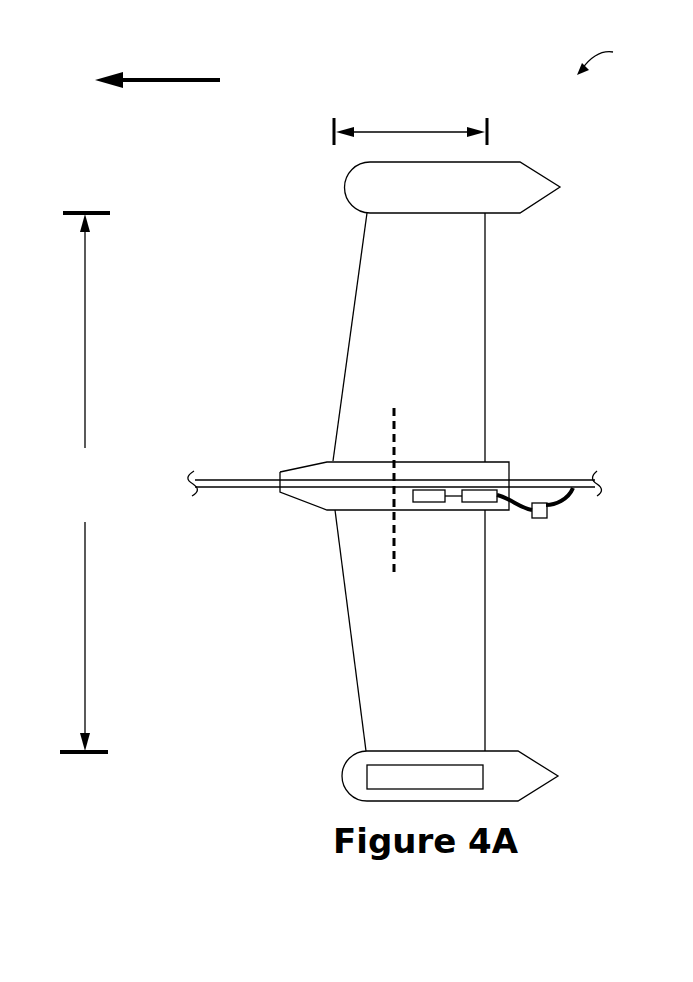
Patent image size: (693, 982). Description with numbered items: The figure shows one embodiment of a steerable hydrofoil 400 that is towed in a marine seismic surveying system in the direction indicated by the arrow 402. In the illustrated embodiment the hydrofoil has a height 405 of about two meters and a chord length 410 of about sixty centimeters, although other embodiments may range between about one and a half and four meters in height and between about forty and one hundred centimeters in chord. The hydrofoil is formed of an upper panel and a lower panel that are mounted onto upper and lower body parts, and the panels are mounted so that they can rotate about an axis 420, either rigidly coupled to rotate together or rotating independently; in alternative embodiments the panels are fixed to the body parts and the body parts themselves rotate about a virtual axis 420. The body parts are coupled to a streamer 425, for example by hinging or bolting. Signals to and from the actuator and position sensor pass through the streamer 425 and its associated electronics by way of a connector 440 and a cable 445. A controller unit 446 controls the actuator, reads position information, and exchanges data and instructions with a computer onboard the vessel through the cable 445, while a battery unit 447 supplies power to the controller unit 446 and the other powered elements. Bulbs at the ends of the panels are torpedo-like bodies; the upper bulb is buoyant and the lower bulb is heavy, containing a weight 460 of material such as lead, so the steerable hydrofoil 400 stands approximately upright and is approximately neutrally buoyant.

The steerable hydrofoil 400 is at (620, 54).
The arrow 402 is at (148, 80).
The height 405 is at (85, 482).
The chord length 410 is at (405, 132).
The axis 420 is at (396, 432).
The streamer 425 is at (212, 479).
The connector 440 is at (543, 518).
The cable 445 is at (563, 502).
The controller unit 446 is at (484, 503).
The battery unit 447 is at (428, 503).
The weight 460 is at (362, 777).